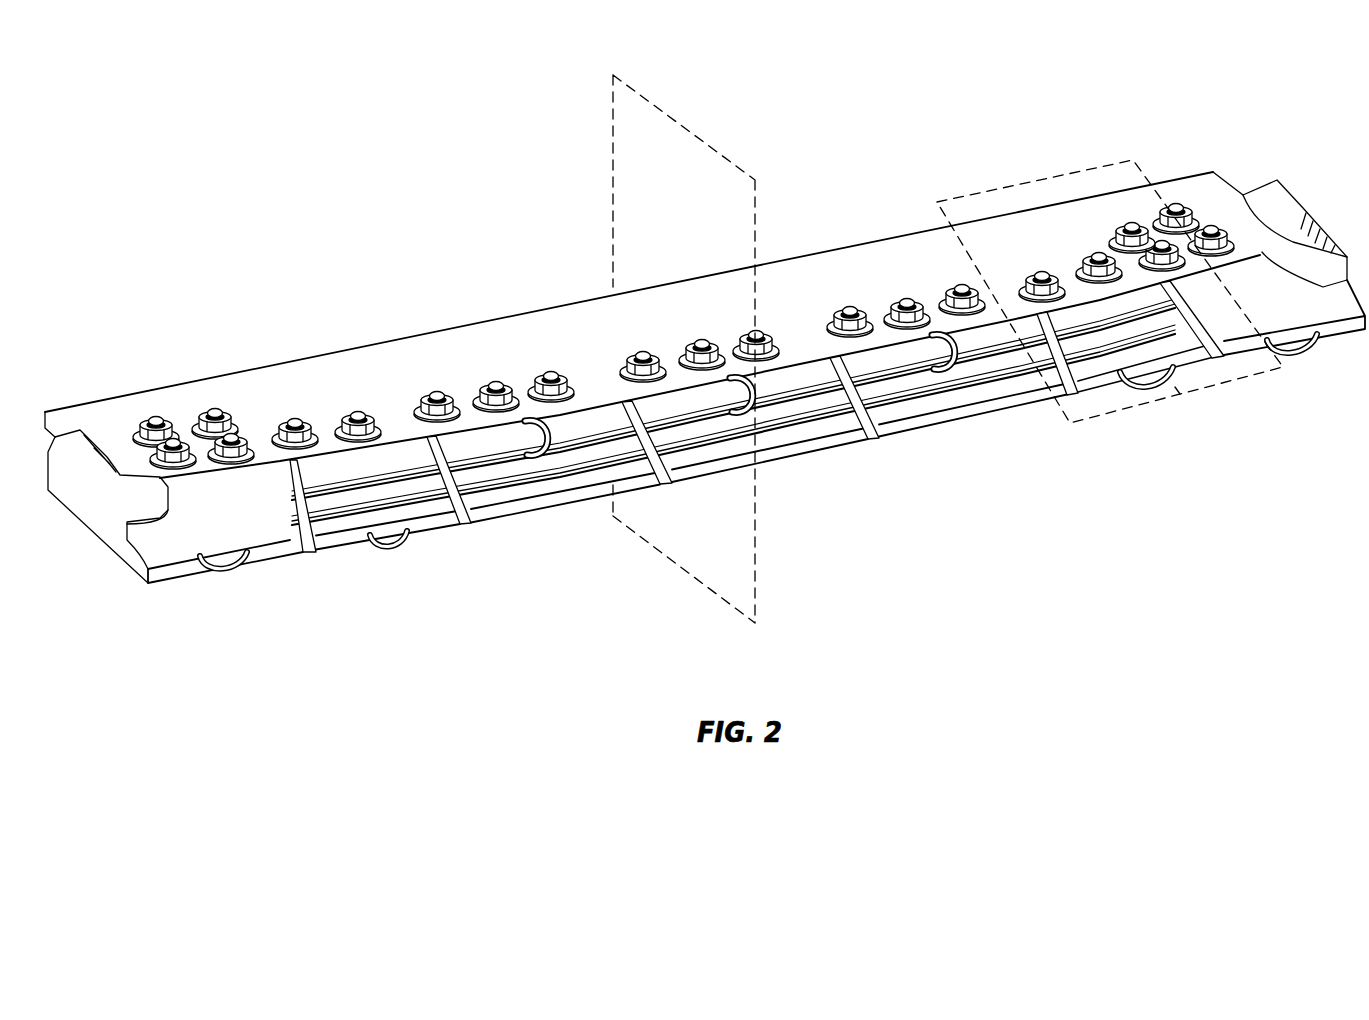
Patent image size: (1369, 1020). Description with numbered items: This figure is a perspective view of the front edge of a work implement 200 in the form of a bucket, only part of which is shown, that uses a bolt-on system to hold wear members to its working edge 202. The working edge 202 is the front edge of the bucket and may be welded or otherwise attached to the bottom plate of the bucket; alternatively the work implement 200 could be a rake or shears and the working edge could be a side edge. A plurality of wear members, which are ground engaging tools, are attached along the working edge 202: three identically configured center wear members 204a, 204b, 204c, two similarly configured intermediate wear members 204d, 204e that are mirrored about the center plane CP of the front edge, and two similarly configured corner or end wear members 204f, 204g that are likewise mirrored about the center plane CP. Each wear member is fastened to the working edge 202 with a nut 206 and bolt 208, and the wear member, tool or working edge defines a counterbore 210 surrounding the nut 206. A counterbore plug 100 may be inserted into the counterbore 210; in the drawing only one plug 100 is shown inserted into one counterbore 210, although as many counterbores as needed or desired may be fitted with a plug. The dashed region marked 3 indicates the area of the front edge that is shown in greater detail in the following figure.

The work implement 200 is at (1013, 167).
The working edge 202 is at (1131, 173).
The counterbore plug 100 is at (1119, 258).
The nut 206 is at (1032, 278).
The bolt 208 is at (1041, 273).
The counterbore 210 is at (1024, 284).
The center wear member 204a is at (540, 505).
The center wear member 204b is at (777, 453).
The center wear member 204c is at (968, 413).
The intermediate wear member 204d is at (418, 530).
The intermediate wear member 204e is at (1102, 387).
The corner or end wear member 204f is at (267, 550).
The corner or end wear member 204g is at (1247, 348).
The section indicator for FIG. 3 is at (1180, 394).
The center plane CP is at (675, 118).